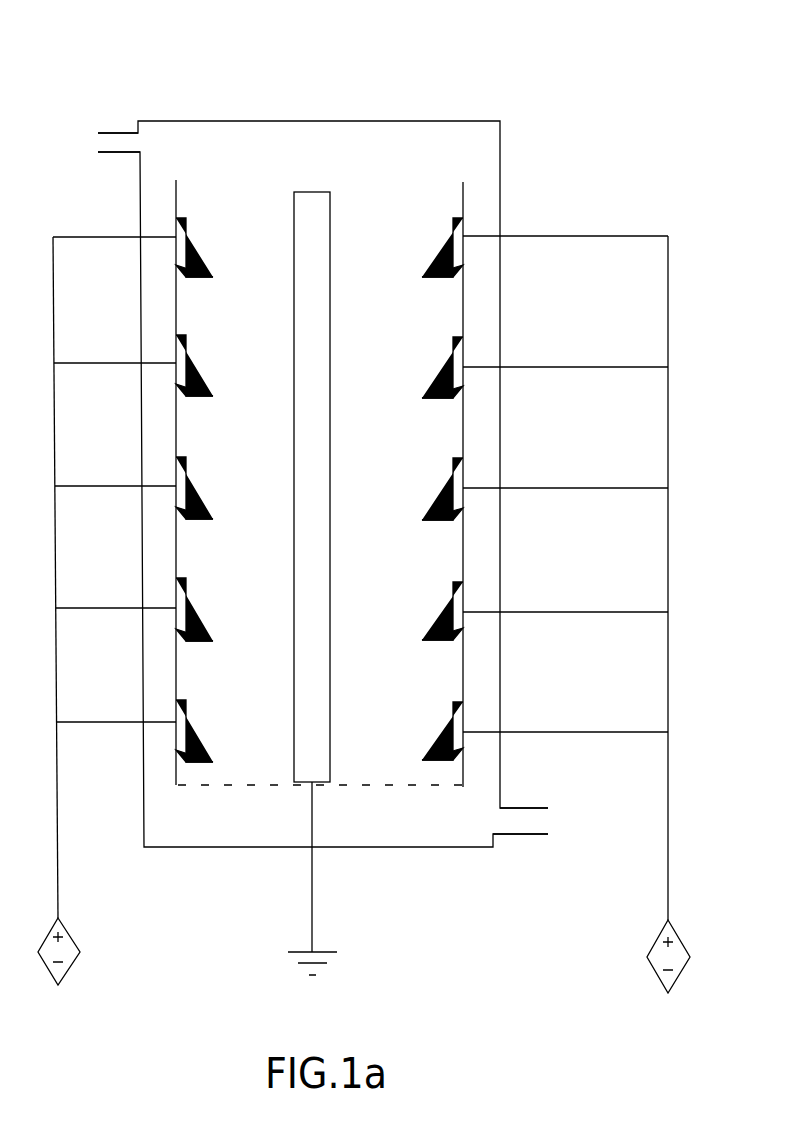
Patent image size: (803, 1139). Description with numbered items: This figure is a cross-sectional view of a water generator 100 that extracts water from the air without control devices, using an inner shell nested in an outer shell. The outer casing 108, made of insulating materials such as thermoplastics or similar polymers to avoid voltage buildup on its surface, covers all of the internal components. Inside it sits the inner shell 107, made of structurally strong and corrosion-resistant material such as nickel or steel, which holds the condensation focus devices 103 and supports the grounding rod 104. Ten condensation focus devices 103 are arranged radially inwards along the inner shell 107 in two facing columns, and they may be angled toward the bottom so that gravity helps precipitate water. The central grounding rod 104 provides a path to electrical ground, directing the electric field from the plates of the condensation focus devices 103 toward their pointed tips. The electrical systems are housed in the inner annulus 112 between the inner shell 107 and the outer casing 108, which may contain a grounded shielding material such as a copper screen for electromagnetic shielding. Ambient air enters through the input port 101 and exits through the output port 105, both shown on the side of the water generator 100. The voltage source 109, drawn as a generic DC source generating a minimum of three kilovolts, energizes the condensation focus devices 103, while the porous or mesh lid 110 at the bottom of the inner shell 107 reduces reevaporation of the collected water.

The water generator 100 is at (568, 50).
The input port 101 is at (110, 132).
The condensation focus device 103 is at (180, 735).
The grounding rod 104 is at (322, 784).
The output port 105 is at (547, 836).
The inner shell 107 is at (173, 302).
The outer casing 108 is at (502, 123).
The voltage source 109 is at (84, 951).
The porous or mesh lid 110 is at (242, 791).
The inner annulus 112 is at (476, 220).